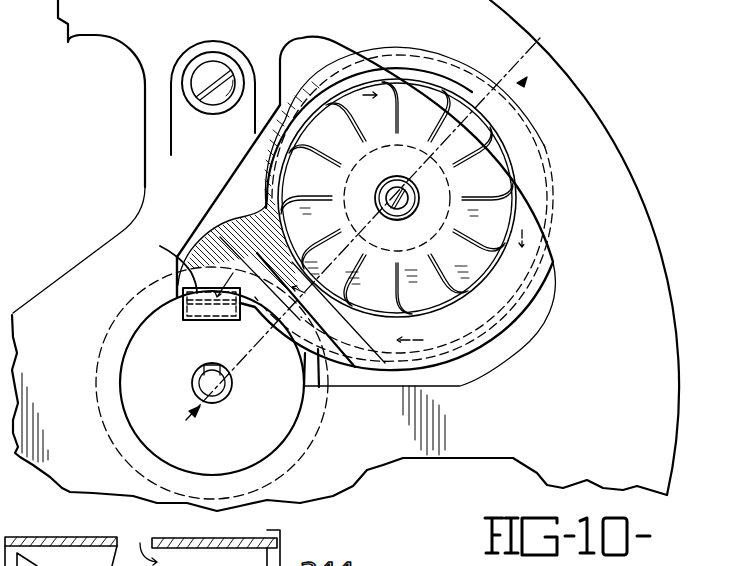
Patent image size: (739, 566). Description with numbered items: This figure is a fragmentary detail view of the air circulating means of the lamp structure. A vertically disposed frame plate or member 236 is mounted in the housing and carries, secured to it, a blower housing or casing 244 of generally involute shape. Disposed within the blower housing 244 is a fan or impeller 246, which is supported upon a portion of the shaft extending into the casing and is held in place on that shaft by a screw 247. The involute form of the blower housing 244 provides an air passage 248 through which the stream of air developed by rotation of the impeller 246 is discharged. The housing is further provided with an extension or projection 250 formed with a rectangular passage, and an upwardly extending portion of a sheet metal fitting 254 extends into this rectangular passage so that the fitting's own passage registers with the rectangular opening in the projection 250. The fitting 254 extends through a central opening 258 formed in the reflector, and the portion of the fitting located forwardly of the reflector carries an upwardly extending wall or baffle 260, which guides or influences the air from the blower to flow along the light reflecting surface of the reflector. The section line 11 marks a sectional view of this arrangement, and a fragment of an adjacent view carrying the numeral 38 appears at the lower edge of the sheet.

The section line 11- 11 is at (372, 244).
The frame plate 236 is at (600, 128).
The blower housing 244 is at (545, 280).
The fan or impeller 246 is at (467, 200).
The screw 247 is at (393, 196).
The air passage 248 is at (318, 340).
The extension or projection 250 is at (170, 290).
The sheet metal fitting 254 is at (203, 323).
The central opening 258 is at (137, 438).
The baffle or wall 260 is at (155, 263).
The cover plate 38 is at (38, 515).